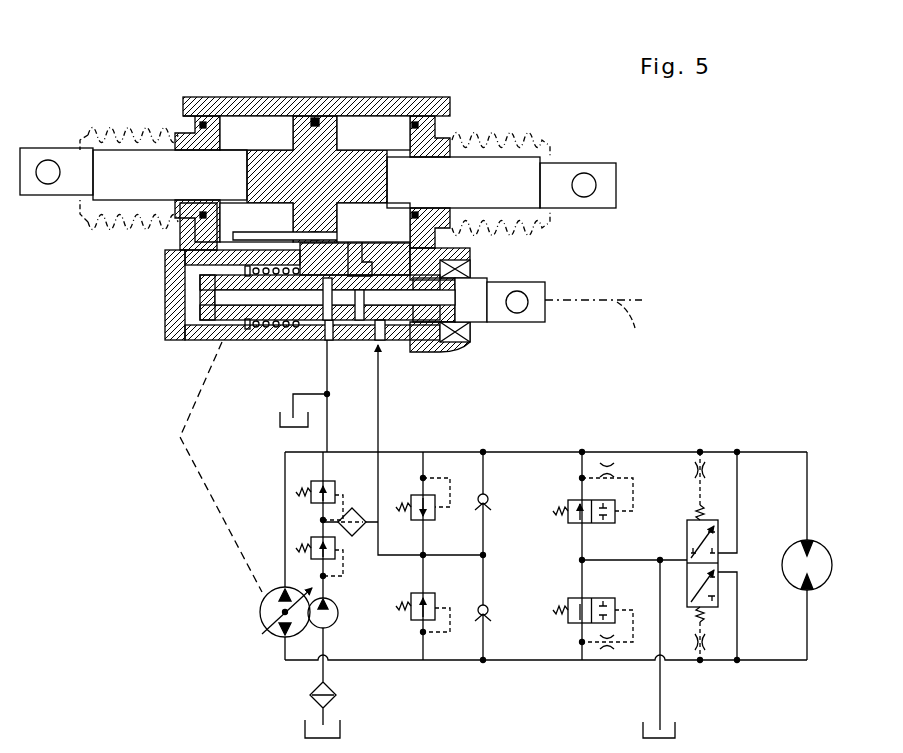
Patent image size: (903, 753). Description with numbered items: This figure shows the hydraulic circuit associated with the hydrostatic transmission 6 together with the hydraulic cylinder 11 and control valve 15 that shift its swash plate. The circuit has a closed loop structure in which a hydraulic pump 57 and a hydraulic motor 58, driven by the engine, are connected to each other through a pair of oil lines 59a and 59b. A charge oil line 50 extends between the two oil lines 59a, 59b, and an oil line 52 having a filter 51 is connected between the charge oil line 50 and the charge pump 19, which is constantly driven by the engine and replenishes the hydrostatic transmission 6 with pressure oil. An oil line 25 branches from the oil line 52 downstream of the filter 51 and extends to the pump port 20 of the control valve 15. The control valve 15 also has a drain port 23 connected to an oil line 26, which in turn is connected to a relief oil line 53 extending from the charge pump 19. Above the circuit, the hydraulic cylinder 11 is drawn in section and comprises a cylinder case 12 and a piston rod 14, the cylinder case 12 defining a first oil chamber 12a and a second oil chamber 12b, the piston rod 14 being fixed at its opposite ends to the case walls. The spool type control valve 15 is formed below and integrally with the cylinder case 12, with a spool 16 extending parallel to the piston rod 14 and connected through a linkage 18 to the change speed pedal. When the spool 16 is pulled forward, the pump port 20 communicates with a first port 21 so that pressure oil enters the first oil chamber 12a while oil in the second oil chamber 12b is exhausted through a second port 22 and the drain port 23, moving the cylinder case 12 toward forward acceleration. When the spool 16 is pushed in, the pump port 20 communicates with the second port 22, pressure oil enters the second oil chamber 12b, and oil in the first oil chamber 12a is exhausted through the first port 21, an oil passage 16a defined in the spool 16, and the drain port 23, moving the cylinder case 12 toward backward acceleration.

The hydrostatic transmission 6 is at (534, 540).
The hydraulic cylinder 11 is at (278, 98).
The cylinder case 12 is at (375, 97).
The first oil chamber 12a is at (373, 133).
The second oil chamber 12b is at (256, 133).
The piston rod 14 is at (125, 158).
The control valve 15 is at (245, 342).
The spool 16 is at (477, 318).
The oil passage 16a is at (357, 298).
The linkage 18 is at (603, 323).
The charge pump 19 is at (338, 618).
The pump port 20 is at (383, 343).
The first port 21 is at (403, 246).
The second port 22 is at (228, 238).
The drain port 23 is at (327, 334).
The oil line 25 is at (382, 442).
The oil line 26 is at (322, 383).
The charge oil line 50 is at (486, 538).
The filter 51 is at (352, 508).
The oil line 52 is at (402, 556).
The relief oil line 53 is at (329, 437).
The hydraulic pump 57 is at (272, 637).
The hydraulic motor 58 is at (832, 568).
The oil line 59a is at (560, 450).
The oil line 59b is at (517, 661).